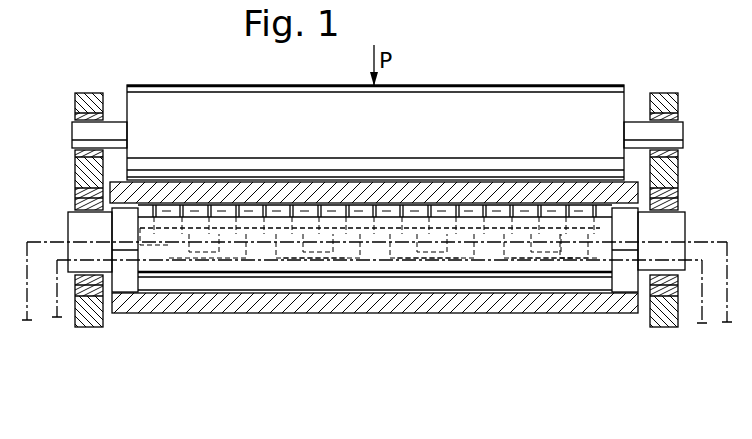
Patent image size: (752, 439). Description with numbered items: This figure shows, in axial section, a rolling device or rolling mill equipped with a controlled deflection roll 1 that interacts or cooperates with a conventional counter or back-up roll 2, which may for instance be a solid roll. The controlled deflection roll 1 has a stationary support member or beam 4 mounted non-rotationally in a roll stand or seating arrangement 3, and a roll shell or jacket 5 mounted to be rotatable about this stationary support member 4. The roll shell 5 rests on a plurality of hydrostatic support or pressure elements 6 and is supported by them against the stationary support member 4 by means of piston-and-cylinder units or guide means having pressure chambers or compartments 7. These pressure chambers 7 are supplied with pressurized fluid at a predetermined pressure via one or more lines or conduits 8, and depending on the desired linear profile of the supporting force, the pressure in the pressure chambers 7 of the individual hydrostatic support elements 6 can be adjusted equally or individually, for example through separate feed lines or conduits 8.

The controlled deflection roll 1 is at (192, 322).
The counter or back-up roll 2 is at (545, 98).
The roll stand or seating arrangement 3 is at (673, 172).
The stationary support member or beam 4 is at (307, 267).
The roll shell or jacket 5 is at (457, 313).
The hydrostatic support or pressure elements 6 is at (532, 212).
The pressure chambers or compartments 7 is at (383, 230).
The lines or conduits 8 is at (259, 266).